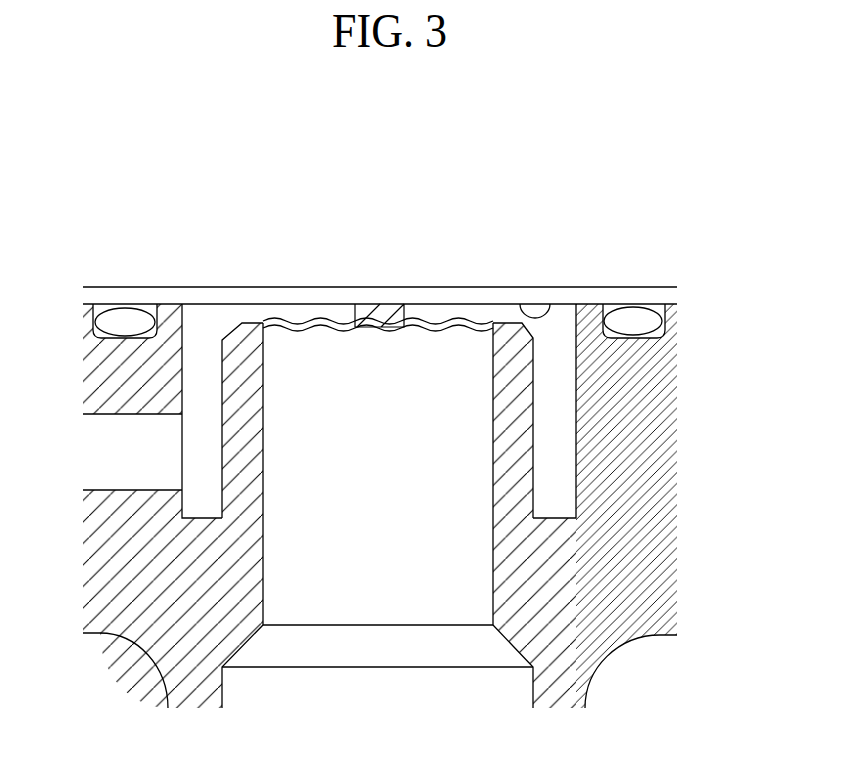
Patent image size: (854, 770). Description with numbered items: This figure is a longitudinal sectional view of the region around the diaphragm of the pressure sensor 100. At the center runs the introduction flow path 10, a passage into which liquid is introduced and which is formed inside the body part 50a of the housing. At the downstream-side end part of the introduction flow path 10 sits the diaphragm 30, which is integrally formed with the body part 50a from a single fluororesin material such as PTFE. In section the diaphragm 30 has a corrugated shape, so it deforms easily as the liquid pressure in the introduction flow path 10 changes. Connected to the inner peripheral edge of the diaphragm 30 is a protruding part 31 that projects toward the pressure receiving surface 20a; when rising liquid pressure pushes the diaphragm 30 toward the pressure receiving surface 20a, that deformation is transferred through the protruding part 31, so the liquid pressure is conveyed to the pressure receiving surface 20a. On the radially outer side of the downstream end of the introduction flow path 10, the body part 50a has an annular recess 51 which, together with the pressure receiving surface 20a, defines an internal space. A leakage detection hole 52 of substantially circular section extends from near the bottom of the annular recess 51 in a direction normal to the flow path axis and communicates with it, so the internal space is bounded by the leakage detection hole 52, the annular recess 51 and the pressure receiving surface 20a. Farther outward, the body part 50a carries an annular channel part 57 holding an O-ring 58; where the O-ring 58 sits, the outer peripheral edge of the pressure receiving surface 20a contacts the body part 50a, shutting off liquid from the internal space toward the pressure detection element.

The pressure sensor 100 is at (399, 415).
The introduction flow path 10 is at (448, 577).
The pressure receiving surface 20a is at (522, 302).
The diaphragm 30 is at (440, 330).
The protruding part 31 is at (378, 313).
The body part 50a is at (635, 392).
The annular recess 51 is at (208, 462).
The leakage detection hole 52 is at (125, 453).
The annular channel part 57 is at (115, 309).
The O-ring 58 is at (141, 318).